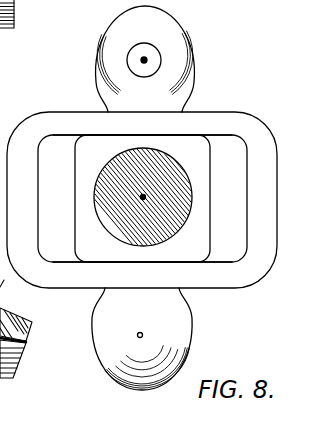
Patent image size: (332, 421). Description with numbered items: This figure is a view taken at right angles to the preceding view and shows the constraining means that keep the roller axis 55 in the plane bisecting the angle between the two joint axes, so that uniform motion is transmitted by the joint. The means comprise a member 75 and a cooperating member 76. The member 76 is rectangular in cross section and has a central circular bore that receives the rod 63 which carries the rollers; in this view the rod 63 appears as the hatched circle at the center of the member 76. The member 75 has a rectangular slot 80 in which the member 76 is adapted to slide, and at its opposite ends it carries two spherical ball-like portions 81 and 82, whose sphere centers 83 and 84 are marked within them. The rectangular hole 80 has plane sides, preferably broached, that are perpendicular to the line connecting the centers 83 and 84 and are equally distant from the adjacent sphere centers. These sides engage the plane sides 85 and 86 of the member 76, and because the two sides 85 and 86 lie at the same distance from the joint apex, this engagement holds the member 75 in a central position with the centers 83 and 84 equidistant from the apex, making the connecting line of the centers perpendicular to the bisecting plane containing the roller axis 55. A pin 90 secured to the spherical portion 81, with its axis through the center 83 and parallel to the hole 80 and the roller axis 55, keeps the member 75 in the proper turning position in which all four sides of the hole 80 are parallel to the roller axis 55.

The roller axis 55 is at (143, 197).
The rod 63 is at (177, 207).
The member 75 is at (247, 130).
The cooperating member 76 is at (203, 179).
The rectangular slot 80 is at (237, 219).
The spherical ball-like portion 81 is at (184, 68).
The spherical ball-like portion 82 is at (178, 334).
The center 83 is at (146, 58).
The center 84 is at (140, 337).
The side 85 is at (183, 136).
The side 86 is at (177, 262).
The pin 90 is at (130, 47).